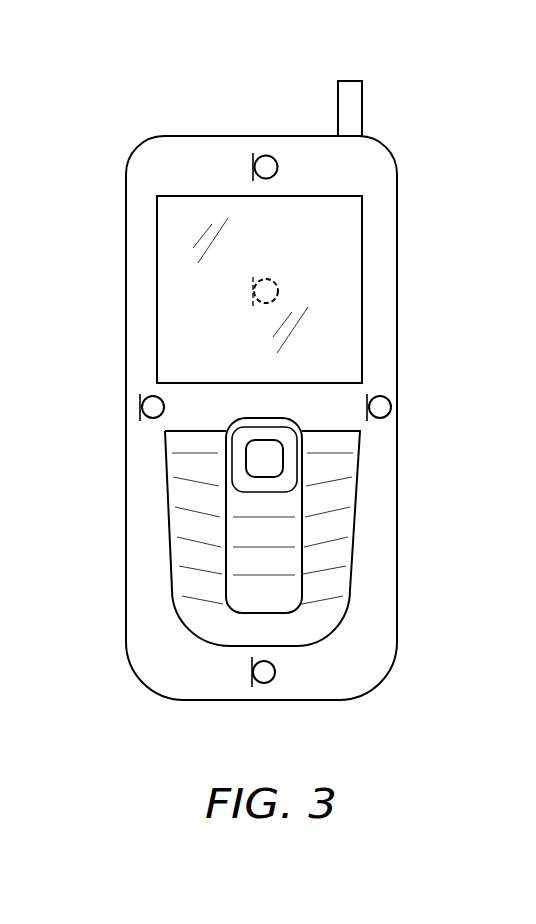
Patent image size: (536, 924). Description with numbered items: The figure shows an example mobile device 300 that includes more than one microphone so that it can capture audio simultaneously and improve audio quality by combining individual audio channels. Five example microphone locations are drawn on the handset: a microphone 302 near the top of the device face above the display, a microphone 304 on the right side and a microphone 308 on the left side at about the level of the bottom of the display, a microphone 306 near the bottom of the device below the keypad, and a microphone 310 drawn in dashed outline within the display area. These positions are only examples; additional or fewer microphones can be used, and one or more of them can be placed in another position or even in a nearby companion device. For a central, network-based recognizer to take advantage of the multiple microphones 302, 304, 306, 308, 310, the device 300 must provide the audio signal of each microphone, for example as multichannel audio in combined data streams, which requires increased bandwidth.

The mobile device 300 is at (194, 88).
The microphone 302 is at (266, 155).
The microphone 304 is at (391, 407).
The microphone 306 is at (274, 677).
The microphone 308 is at (140, 407).
The microphone 310 is at (253, 290).